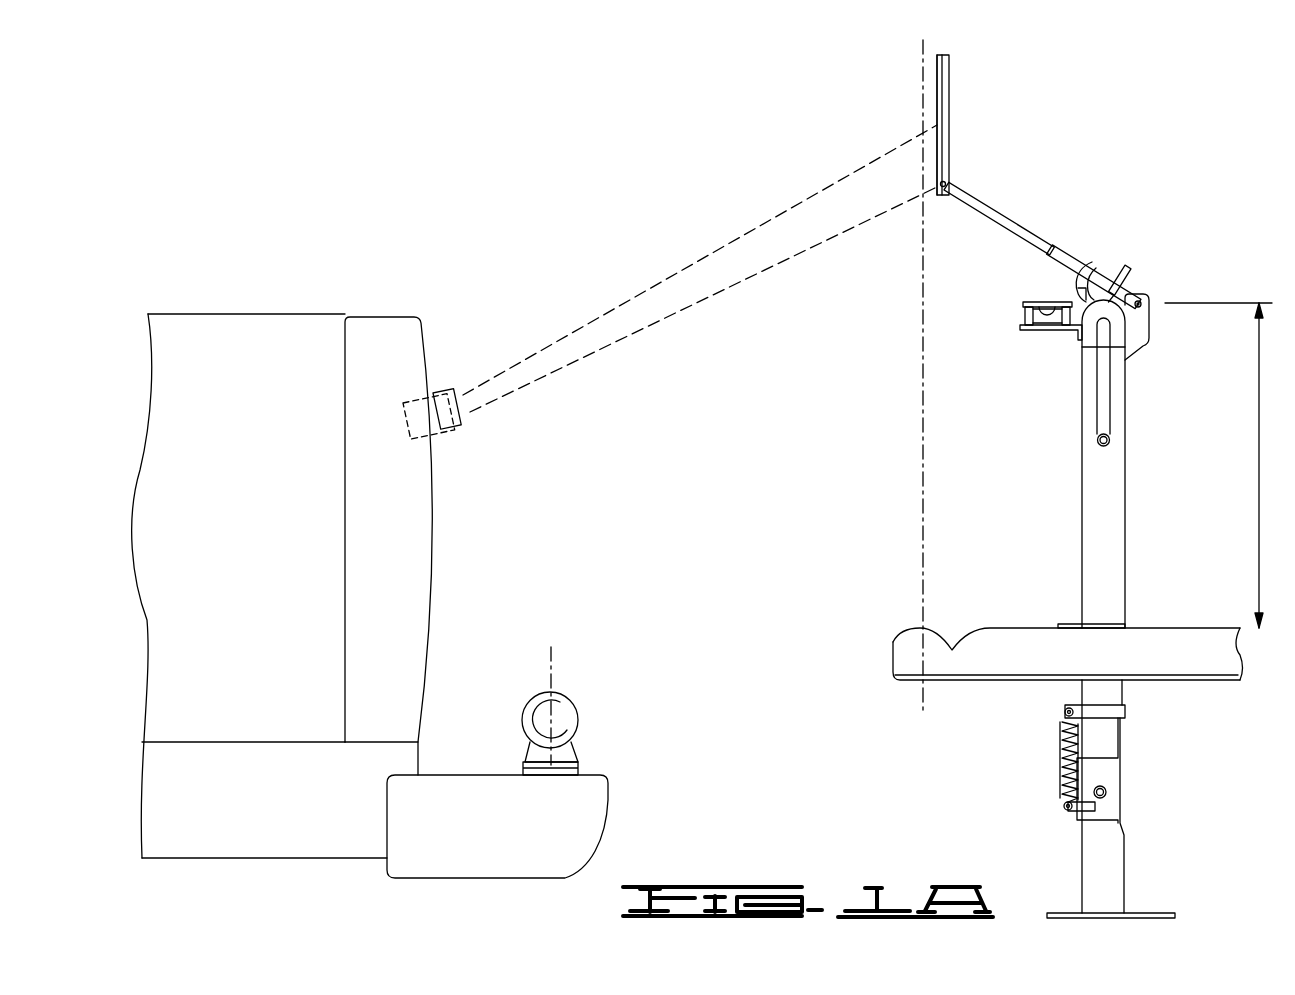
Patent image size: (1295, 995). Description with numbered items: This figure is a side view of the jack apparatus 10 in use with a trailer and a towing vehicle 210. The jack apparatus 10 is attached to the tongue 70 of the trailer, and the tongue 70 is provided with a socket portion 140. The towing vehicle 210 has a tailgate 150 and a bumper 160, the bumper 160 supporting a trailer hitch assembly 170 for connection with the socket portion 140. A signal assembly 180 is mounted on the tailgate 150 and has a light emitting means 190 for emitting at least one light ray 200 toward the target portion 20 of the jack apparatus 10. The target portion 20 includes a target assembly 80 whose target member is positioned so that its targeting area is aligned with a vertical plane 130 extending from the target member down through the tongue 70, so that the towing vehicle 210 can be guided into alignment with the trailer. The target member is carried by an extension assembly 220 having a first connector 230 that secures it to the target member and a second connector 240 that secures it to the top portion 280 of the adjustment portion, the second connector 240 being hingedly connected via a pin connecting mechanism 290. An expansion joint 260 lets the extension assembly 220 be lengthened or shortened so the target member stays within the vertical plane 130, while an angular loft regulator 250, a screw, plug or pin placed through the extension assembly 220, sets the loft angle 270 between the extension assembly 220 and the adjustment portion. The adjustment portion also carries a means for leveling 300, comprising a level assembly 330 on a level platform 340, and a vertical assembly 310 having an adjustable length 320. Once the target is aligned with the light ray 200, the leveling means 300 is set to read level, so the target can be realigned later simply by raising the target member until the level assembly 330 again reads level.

The jack apparatus 10 is at (1150, 415).
The target portion 20 is at (946, 120).
The tongue 70 is at (1168, 660).
The target assembly 80 is at (942, 62).
The vertical plane 130 is at (922, 340).
The socket portion 140 is at (903, 655).
The tailgate 150 is at (385, 335).
The bumper 160 is at (596, 800).
The trailer hitch assembly 170 is at (558, 705).
The signal assembly 180 is at (445, 392).
The light emitting means 190 is at (458, 425).
The light ray 200 is at (693, 262).
The towing vehicle 210 is at (246, 335).
The extension assembly 220 is at (1082, 263).
The first connector 230 is at (948, 183).
The second connector 240 is at (1141, 300).
The angular loft regulator 250 is at (1130, 266).
The expansion joint 260 is at (1062, 250).
The loft angle 270 is at (1075, 293).
The top portion 280 is at (1147, 340).
The pin connecting mechanism 290 is at (1143, 306).
The means for leveling 300 is at (1006, 354).
The vertical assembly 310 is at (1085, 595).
The adjustable length 320 is at (1258, 470).
The level assembly 330 is at (1020, 315).
The level platform 340 is at (1050, 330).